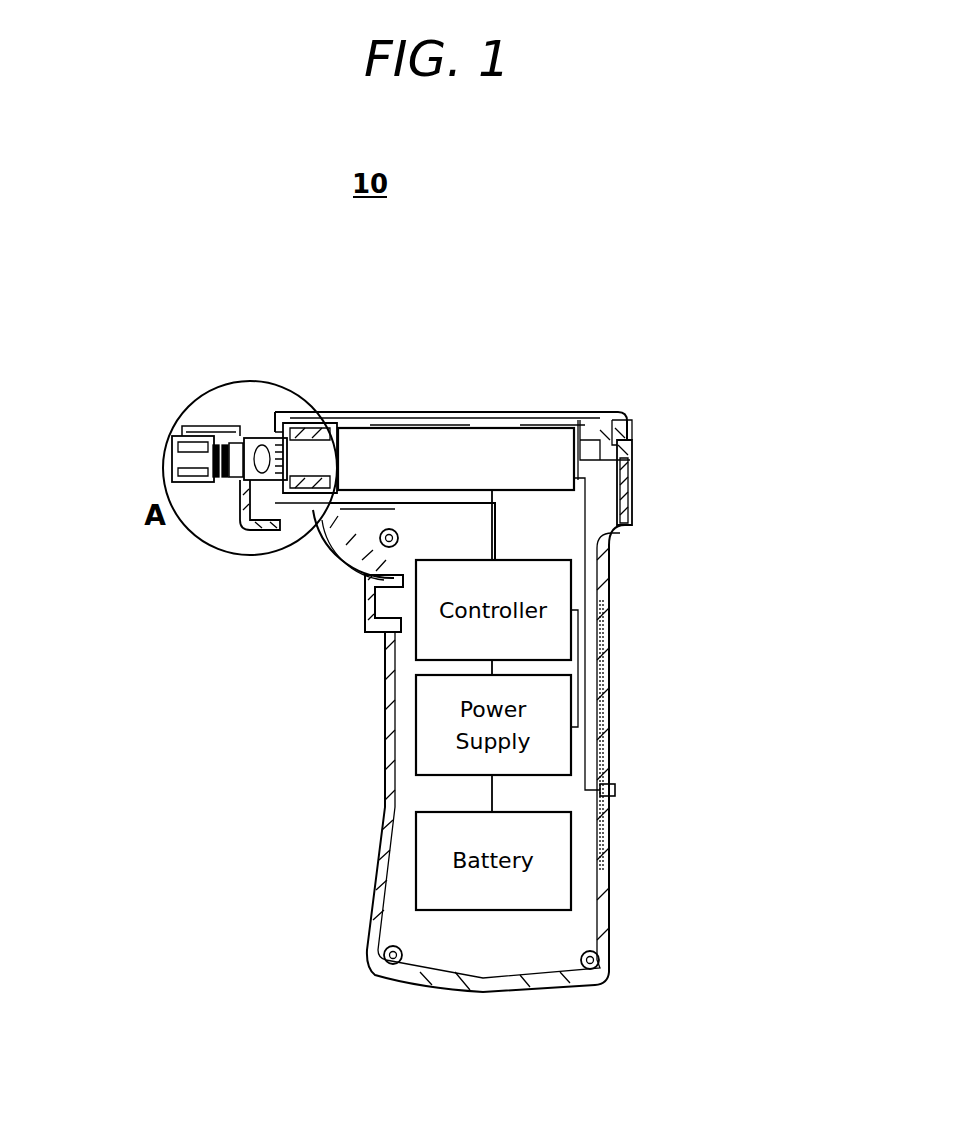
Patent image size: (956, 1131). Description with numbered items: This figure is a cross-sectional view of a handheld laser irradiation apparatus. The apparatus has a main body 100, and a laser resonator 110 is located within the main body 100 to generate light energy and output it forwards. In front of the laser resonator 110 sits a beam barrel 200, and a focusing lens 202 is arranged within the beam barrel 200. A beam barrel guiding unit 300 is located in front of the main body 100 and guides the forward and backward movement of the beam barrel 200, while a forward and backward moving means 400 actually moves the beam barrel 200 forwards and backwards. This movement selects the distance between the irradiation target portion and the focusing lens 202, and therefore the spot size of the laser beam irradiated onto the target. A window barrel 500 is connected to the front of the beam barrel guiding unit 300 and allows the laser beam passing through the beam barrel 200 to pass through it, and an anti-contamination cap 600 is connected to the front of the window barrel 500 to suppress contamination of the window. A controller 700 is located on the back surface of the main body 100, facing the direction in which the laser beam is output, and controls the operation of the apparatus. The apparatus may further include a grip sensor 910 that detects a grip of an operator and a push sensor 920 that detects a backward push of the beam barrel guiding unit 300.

The main body 100 is at (387, 757).
The laser resonator 110 is at (470, 435).
The beam barrel 200 is at (250, 473).
The focusing lens 202 is at (253, 467).
The beam barrel guiding unit 300 is at (330, 447).
The forward and backward moving means 400 is at (253, 430).
The window barrel 500 is at (217, 440).
The anti-contamination cap 600 is at (170, 472).
The controller 700 is at (632, 463).
The grip sensor 910 is at (615, 787).
The push sensor 920 is at (328, 530).